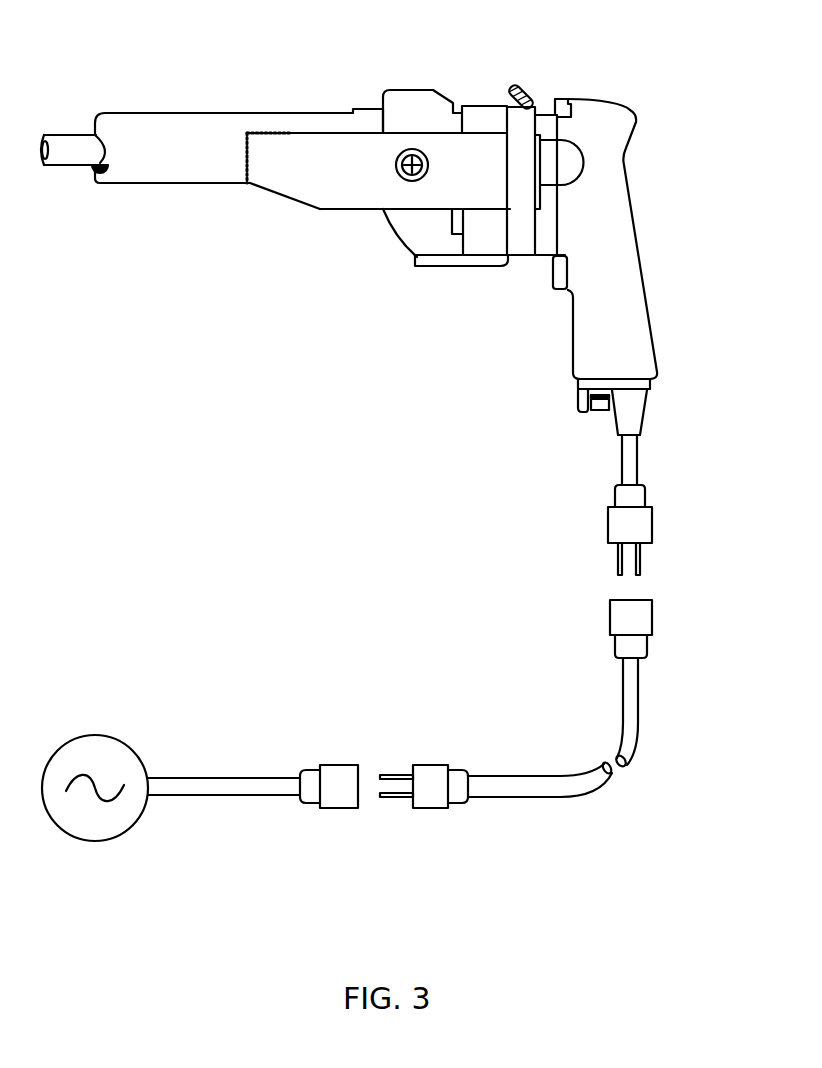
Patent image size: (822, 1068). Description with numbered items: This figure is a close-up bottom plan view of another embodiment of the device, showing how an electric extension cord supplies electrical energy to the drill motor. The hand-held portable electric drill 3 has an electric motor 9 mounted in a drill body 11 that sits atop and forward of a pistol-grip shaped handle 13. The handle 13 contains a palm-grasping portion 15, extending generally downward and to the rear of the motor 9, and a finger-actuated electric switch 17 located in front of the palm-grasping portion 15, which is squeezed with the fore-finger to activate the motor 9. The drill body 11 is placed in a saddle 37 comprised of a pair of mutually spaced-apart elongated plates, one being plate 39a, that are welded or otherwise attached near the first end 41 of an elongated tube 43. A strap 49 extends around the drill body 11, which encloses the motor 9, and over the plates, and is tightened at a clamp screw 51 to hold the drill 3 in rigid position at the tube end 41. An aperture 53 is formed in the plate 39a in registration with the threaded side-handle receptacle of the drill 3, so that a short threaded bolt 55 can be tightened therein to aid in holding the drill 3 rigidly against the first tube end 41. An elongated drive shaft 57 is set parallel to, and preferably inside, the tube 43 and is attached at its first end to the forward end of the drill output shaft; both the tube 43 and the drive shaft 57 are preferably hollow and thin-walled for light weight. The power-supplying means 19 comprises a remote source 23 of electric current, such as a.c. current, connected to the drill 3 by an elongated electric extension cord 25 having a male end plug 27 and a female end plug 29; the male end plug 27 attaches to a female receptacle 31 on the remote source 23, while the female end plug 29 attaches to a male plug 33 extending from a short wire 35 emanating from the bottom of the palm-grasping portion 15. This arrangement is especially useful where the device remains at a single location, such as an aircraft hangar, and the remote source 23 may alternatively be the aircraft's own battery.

The hand-held portable electric drill 3 is at (493, 106).
The electric motor 9 is at (423, 113).
The drill body 11 is at (492, 237).
The pistol-grip shaped handle 13 is at (638, 222).
The palm-grasping portion 15 is at (625, 322).
The finger-actuated electric switch 17 is at (553, 272).
The means 19 is at (103, 705).
The remote source of electric current 23 is at (112, 747).
The elongated electric extension cord 25 is at (628, 730).
The male end plug 27 is at (420, 773).
The socket connector 29 is at (620, 623).
The female receptacle 31 is at (327, 787).
The male plug 33 is at (617, 528).
The short wire 35 is at (627, 458).
The saddle 37 is at (285, 195).
The elongated plate 39a is at (465, 180).
The first end of elongated tube 41 is at (367, 108).
The elongated tube 43 is at (200, 120).
The strap 49 is at (545, 110).
The clamp screw 51 is at (527, 90).
The aperture 53 is at (404, 180).
The short threaded bolt 55 is at (397, 170).
The elongated drive shaft 57 is at (72, 134).